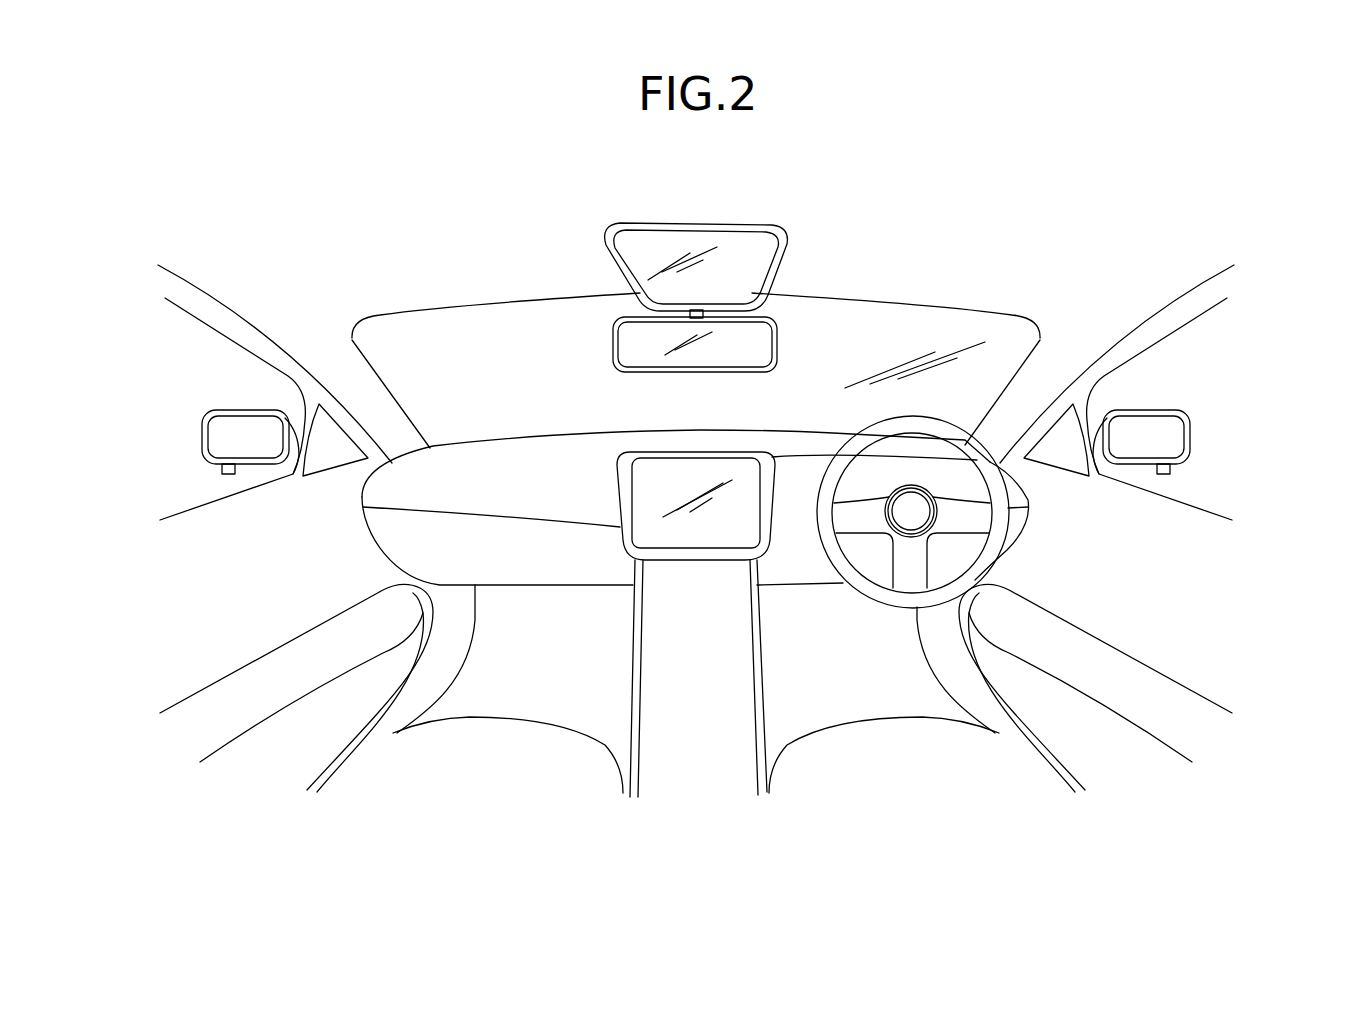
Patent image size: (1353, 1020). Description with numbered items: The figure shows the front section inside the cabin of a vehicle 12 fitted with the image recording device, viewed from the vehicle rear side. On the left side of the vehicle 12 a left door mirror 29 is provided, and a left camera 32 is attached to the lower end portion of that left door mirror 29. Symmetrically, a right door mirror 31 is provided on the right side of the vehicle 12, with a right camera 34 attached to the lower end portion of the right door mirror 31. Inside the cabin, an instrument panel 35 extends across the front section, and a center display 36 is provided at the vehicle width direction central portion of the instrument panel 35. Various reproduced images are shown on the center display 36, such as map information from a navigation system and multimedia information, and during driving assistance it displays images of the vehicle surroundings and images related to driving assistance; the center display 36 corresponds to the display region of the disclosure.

The vehicle 12 is at (1022, 257).
The left door mirror 29 is at (214, 410).
The right door mirror 31 is at (1170, 412).
The left camera 32 is at (228, 476).
The right camera 34 is at (1165, 476).
The instrument panel 35 is at (547, 433).
The center display 36 is at (733, 470).